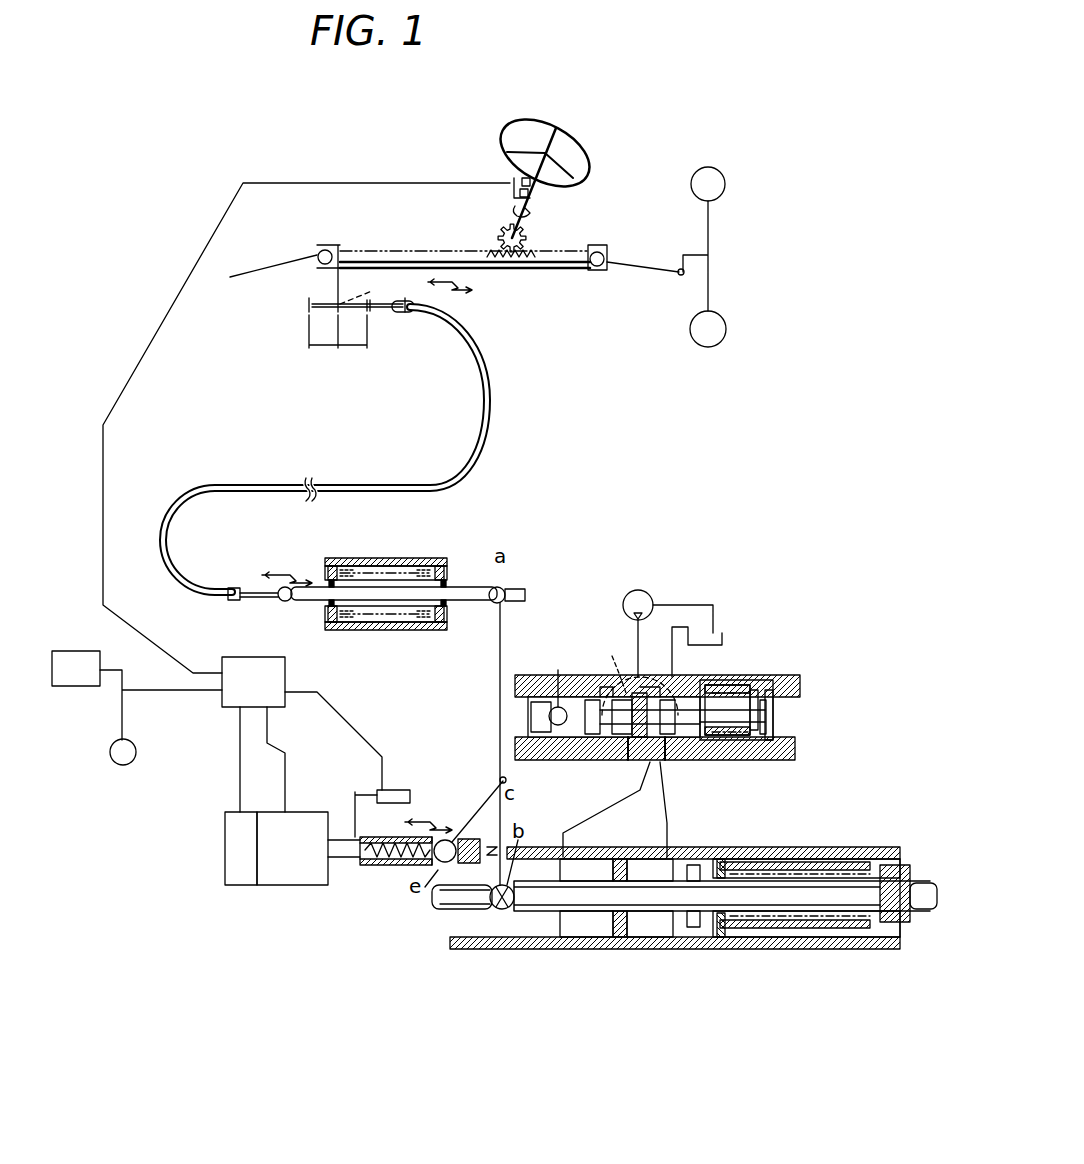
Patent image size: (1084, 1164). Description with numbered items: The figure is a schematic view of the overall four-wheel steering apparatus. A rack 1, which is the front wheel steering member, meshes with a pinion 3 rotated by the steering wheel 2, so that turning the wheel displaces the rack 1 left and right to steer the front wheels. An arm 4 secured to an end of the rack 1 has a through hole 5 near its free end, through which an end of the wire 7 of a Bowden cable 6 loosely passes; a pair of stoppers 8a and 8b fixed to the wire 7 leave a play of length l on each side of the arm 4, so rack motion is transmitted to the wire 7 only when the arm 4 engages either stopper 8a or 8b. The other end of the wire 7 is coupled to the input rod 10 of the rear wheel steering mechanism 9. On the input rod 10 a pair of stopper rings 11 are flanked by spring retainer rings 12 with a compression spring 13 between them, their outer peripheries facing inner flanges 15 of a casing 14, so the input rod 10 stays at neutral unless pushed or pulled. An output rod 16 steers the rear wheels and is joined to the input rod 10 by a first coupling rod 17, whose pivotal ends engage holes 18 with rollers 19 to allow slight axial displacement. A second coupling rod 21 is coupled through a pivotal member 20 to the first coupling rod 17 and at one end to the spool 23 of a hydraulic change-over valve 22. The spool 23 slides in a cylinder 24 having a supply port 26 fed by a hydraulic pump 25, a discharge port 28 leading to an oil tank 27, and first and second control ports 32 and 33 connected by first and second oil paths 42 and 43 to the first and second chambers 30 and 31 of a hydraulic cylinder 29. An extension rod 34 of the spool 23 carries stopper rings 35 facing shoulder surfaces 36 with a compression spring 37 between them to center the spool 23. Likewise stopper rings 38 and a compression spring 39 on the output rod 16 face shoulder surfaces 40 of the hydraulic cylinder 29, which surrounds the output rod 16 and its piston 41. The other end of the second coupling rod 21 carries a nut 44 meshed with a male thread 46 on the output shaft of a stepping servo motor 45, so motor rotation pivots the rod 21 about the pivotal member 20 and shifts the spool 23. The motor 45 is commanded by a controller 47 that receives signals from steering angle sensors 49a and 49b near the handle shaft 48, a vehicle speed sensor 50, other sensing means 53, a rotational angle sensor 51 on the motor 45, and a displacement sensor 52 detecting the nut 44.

The rack 1 is at (412, 258).
The steering wheel 2 is at (520, 128).
The pinion 3 is at (528, 238).
The arm 4 is at (343, 282).
The through hole 5 is at (363, 288).
The Bowden cable 6 is at (487, 384).
The wire 7 is at (425, 302).
The stopper 8a is at (307, 305).
The stopper 8b is at (371, 311).
The rear wheel steering mechanism 9 is at (620, 542).
The input rod 10 is at (515, 589).
The stopper rings 11 is at (330, 583).
The spring retainer rings 12 is at (333, 566).
The compression spring 13 is at (408, 570).
The casing 14 is at (380, 632).
The inner flanges 15 is at (327, 625).
The output rod 16 is at (455, 907).
The first coupling rod 17 is at (498, 710).
The holes 18 is at (505, 600).
The rollers 19 is at (492, 603).
The pivotal member 20 is at (508, 780).
The second coupling rod 21 is at (478, 805).
The hydraulic change-over valve 22 is at (547, 672).
The spool 23 is at (583, 705).
The cylinder 24 is at (774, 718).
The hydraulic pump 25 is at (648, 594).
The supply port 26 is at (623, 680).
The oil tank 27 is at (726, 640).
The discharge port 28 is at (672, 675).
The hydraulic cylinder 29 is at (640, 937).
The first chamber 30 is at (670, 937).
The second chamber 31 is at (578, 937).
The first control port 32 is at (630, 755).
The second control port 33 is at (667, 745).
The extension rod 34 is at (773, 700).
The stopper rings 35 is at (768, 738).
The shoulder surfaces 36 is at (706, 682).
The compression spring 37 is at (742, 758).
The stopper rings 38 is at (720, 858).
The compression spring 39 is at (818, 930).
The shoulder surfaces 40 is at (893, 847).
The piston 41 is at (620, 937).
The first oil path 42 is at (690, 809).
The second oil path 43 is at (614, 818).
The nut 44 is at (415, 866).
The stepping servo motor 45 is at (308, 875).
The male thread 46 is at (372, 866).
The controller 47 is at (245, 665).
The handle shaft 48 is at (535, 210).
The steering angle sensor 49a is at (535, 182).
The steering angle sensor 49b is at (532, 195).
The vehicle speed sensor 50 is at (130, 762).
The rotational angle sensor 51 is at (248, 875).
The displacement sensor 52 is at (380, 788).
The means including various other sensors 53 is at (80, 688).